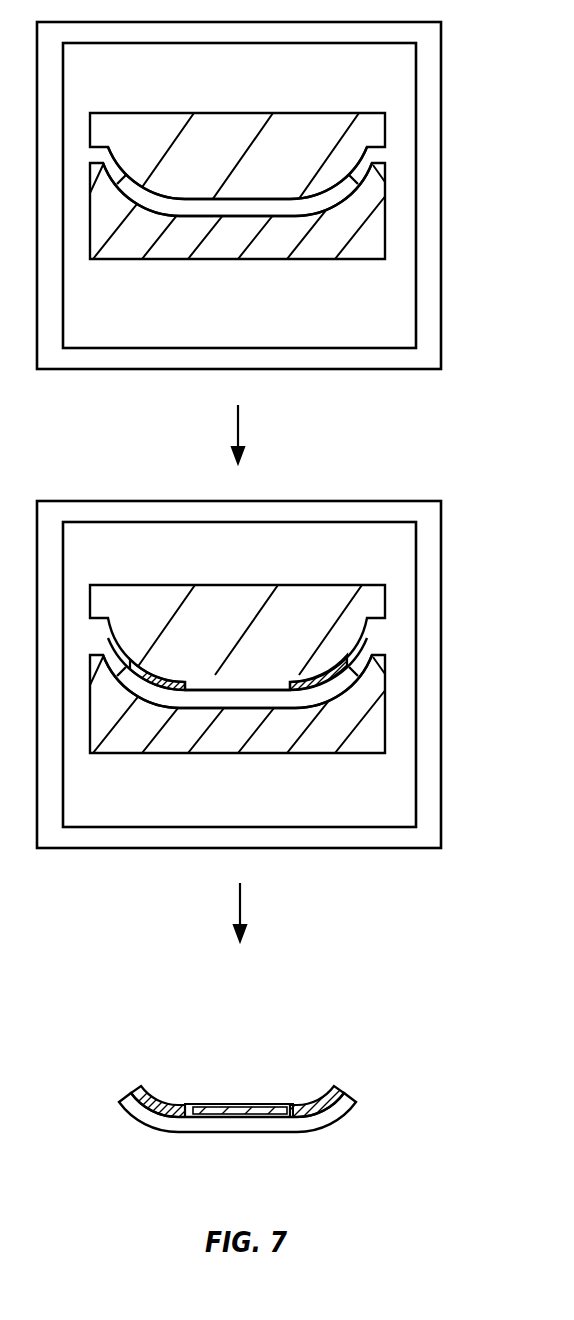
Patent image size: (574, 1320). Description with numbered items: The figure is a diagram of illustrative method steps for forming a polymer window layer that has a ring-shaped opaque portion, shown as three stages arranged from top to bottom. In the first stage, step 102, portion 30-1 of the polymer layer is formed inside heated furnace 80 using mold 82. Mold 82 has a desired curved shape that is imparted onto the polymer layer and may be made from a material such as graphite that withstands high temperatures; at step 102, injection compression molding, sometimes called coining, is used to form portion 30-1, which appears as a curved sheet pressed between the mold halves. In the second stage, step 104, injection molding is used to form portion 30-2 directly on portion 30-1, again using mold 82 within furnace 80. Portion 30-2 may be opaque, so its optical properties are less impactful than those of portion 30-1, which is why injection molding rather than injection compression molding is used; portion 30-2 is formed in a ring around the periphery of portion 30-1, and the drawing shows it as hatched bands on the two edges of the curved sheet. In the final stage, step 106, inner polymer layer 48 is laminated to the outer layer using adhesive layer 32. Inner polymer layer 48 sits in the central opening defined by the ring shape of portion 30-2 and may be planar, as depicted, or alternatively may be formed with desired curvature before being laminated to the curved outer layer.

The heated furnace 80 is at (432, 69).
The mold 82 is at (239, 123).
The portion of polymer layer 30-1 is at (235, 205).
The portion of polymer layer 30-2 is at (178, 678).
The adhesive layer 32 is at (191, 1103).
The inner polymer layer 48 is at (257, 1105).
The step 102 is at (464, 226).
The step 104 is at (464, 724).
The step 106 is at (377, 1041).